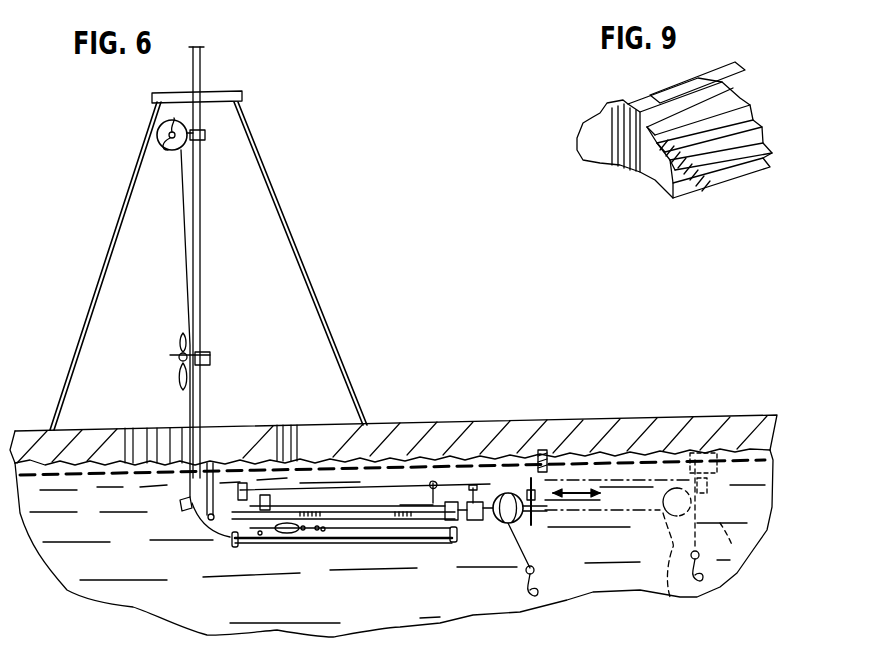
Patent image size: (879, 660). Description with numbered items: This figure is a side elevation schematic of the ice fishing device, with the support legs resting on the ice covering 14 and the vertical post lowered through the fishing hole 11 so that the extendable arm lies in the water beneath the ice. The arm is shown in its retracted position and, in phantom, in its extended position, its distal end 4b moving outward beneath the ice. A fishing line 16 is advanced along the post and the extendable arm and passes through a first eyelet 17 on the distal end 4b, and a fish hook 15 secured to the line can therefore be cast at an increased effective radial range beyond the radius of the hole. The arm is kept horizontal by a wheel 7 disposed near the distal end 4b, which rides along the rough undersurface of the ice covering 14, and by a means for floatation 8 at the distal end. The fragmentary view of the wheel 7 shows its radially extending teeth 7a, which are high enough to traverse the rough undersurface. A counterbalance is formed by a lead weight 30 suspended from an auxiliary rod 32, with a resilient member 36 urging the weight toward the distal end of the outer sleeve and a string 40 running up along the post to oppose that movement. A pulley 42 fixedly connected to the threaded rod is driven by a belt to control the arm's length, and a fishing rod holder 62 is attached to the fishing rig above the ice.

In FIG. 6, the fishing rod holder 62 is at (207, 133).
In FIG. 6, the fishing line 16 is at (186, 203).
In FIG. 6, the string 40 is at (192, 405).
In FIG. 6, the first eyelet 17 is at (205, 467).
In FIG. 6, the pulley 42 is at (233, 477).
In FIG. 6, the fishing hole 11 is at (252, 440).
In FIG. 6, the ice covering 14 is at (425, 425).
In FIG. 6, the wheel 7 is at (563, 453).
In FIG. 9, the wheel 7 is at (603, 143).
In FIG. 9, the radially extending teeth 7a is at (740, 98).
In FIG. 6, the lead weight 30 is at (287, 532).
In FIG. 6, the resilient member 36 is at (363, 545).
In FIG. 6, the auxiliary rod 32 is at (403, 550).
In FIG. 6, the means for floatation 8 is at (495, 520).
In FIG. 6, the fish hook 15 is at (528, 595).
In FIG. 6, the distal end of the extendable arm 4b is at (547, 510).